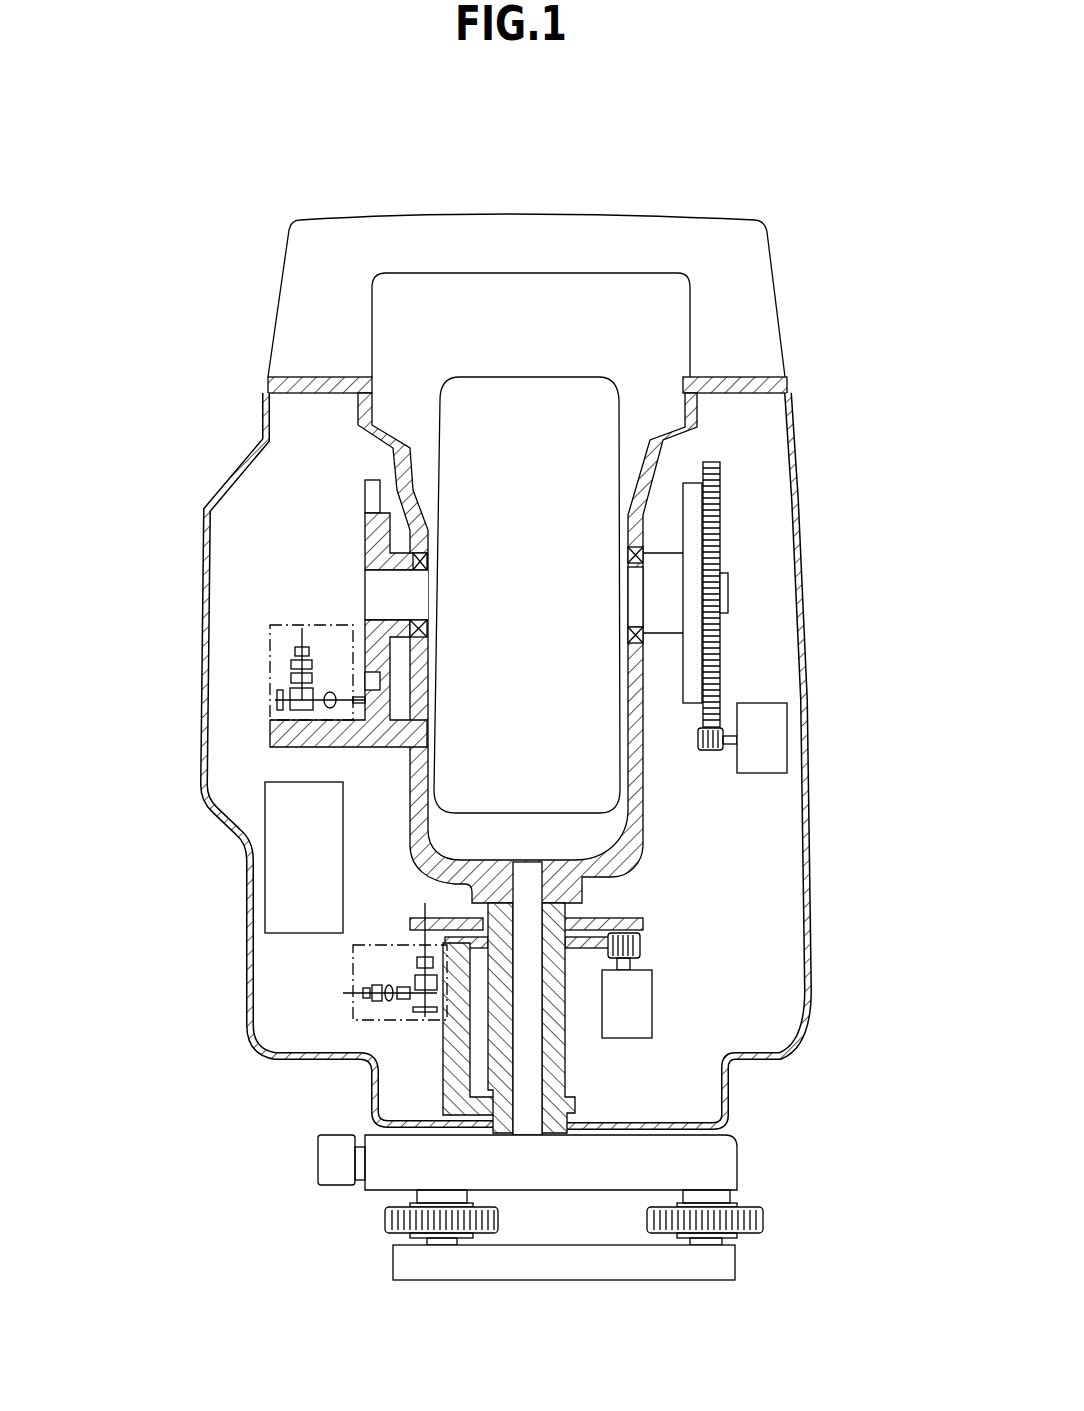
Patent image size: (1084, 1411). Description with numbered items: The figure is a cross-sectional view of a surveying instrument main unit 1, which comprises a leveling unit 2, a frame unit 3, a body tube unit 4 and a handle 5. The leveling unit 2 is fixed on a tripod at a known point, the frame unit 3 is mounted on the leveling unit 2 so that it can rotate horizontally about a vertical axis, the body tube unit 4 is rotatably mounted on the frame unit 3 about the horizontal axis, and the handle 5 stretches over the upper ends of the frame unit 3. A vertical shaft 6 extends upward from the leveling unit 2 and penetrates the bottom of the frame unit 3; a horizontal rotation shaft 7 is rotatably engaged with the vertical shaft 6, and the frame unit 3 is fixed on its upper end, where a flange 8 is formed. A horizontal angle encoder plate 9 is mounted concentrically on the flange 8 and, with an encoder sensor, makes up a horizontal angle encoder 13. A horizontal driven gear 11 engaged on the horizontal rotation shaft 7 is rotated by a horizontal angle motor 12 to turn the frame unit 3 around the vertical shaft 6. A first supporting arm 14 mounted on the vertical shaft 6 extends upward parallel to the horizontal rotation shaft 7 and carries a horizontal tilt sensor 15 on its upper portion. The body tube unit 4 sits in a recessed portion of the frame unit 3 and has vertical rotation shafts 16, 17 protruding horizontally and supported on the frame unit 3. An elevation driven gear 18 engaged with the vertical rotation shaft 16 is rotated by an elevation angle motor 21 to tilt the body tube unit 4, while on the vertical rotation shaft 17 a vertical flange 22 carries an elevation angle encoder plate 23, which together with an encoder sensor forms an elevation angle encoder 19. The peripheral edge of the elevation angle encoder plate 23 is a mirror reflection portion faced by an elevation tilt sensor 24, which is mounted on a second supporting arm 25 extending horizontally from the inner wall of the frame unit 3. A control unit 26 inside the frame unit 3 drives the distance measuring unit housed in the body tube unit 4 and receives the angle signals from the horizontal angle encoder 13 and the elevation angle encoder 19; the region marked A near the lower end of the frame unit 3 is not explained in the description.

The surveying instrument main unit 1 is at (190, 158).
The leveling unit 2 is at (770, 1188).
The frame unit 3 is at (806, 622).
The body tube unit 4 is at (585, 378).
The handle 5 is at (697, 213).
The vertical shaft 6 is at (600, 1110).
The horizontal rotation shaft 7 is at (566, 1035).
The flange 8 is at (570, 917).
The horizontal angle encoder plate 9 is at (644, 923).
The horizontal driven gear 11 is at (653, 990).
The horizontal angle motor 12 is at (653, 1007).
The horizontal angle encoder 13 is at (408, 910).
The first supporting arm 14 is at (443, 1053).
The horizontal tilt sensor 15 is at (360, 985).
The vertical rotation shaft 16 is at (728, 574).
The vertical rotation shaft 17 is at (364, 595).
The elevation driven gear 18 is at (712, 462).
The elevation angle encoder 19 is at (352, 468).
The elevation angle motor 21 is at (767, 774).
The vertical flange 22 is at (364, 548).
The elevation angle encoder plate 23 is at (364, 500).
The elevation tilt sensor 24 is at (270, 650).
The second supporting arm 25 is at (300, 740).
The control unit 26 is at (266, 853).
The connection portion A is at (632, 822).